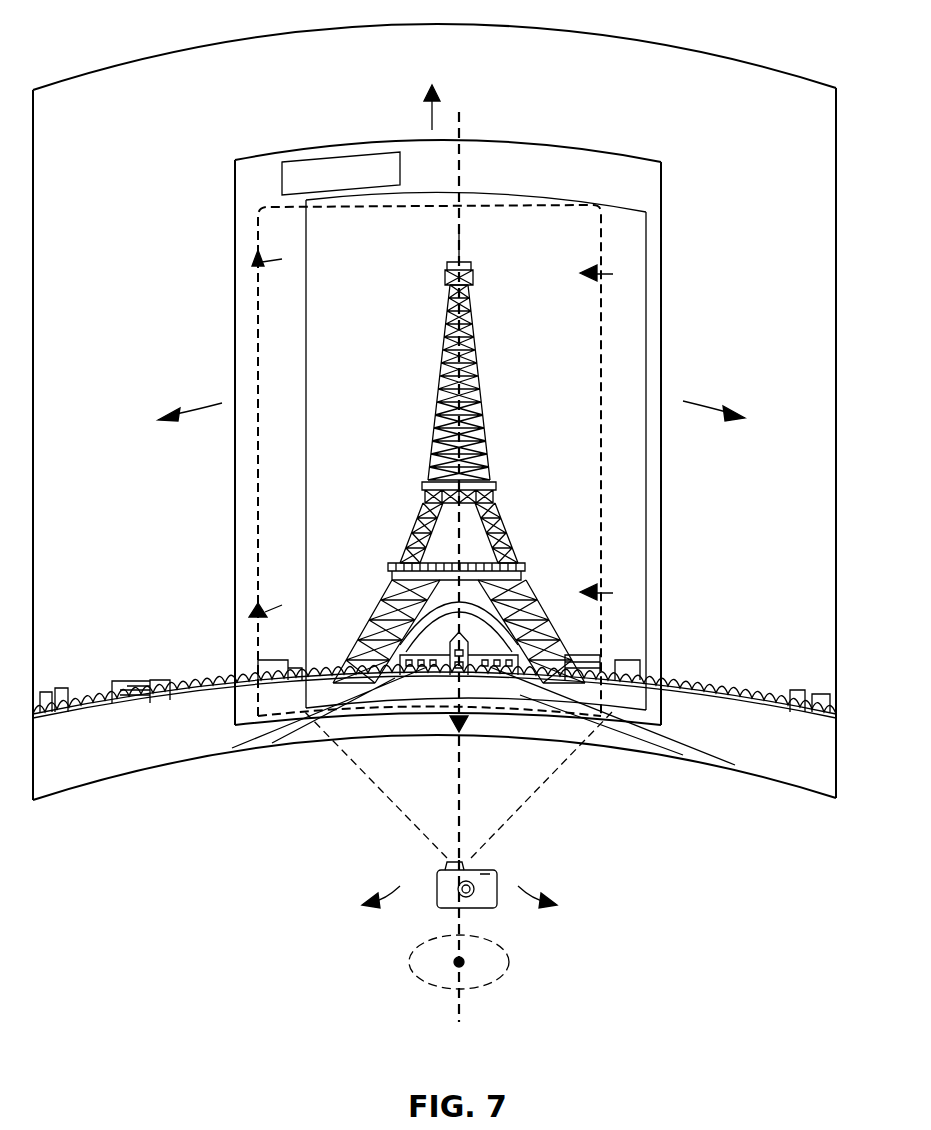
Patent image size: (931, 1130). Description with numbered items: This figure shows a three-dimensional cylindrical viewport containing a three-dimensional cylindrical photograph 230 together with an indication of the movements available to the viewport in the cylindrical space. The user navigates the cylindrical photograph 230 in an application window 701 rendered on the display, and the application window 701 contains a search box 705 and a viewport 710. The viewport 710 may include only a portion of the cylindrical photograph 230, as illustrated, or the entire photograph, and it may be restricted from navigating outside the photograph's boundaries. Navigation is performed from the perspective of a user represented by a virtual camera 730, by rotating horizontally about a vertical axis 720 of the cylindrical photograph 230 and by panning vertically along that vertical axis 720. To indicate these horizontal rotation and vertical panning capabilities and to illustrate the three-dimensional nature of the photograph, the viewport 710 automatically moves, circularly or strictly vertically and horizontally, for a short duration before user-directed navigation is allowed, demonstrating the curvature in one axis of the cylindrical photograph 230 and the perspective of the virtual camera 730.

The three-dimensional cylindrical photograph 230 is at (822, 72).
The application window 701 is at (664, 156).
The search box 705 is at (323, 152).
The viewport 710 is at (470, 190).
The vertical axis 720 is at (464, 1019).
The virtual camera 730 is at (516, 862).